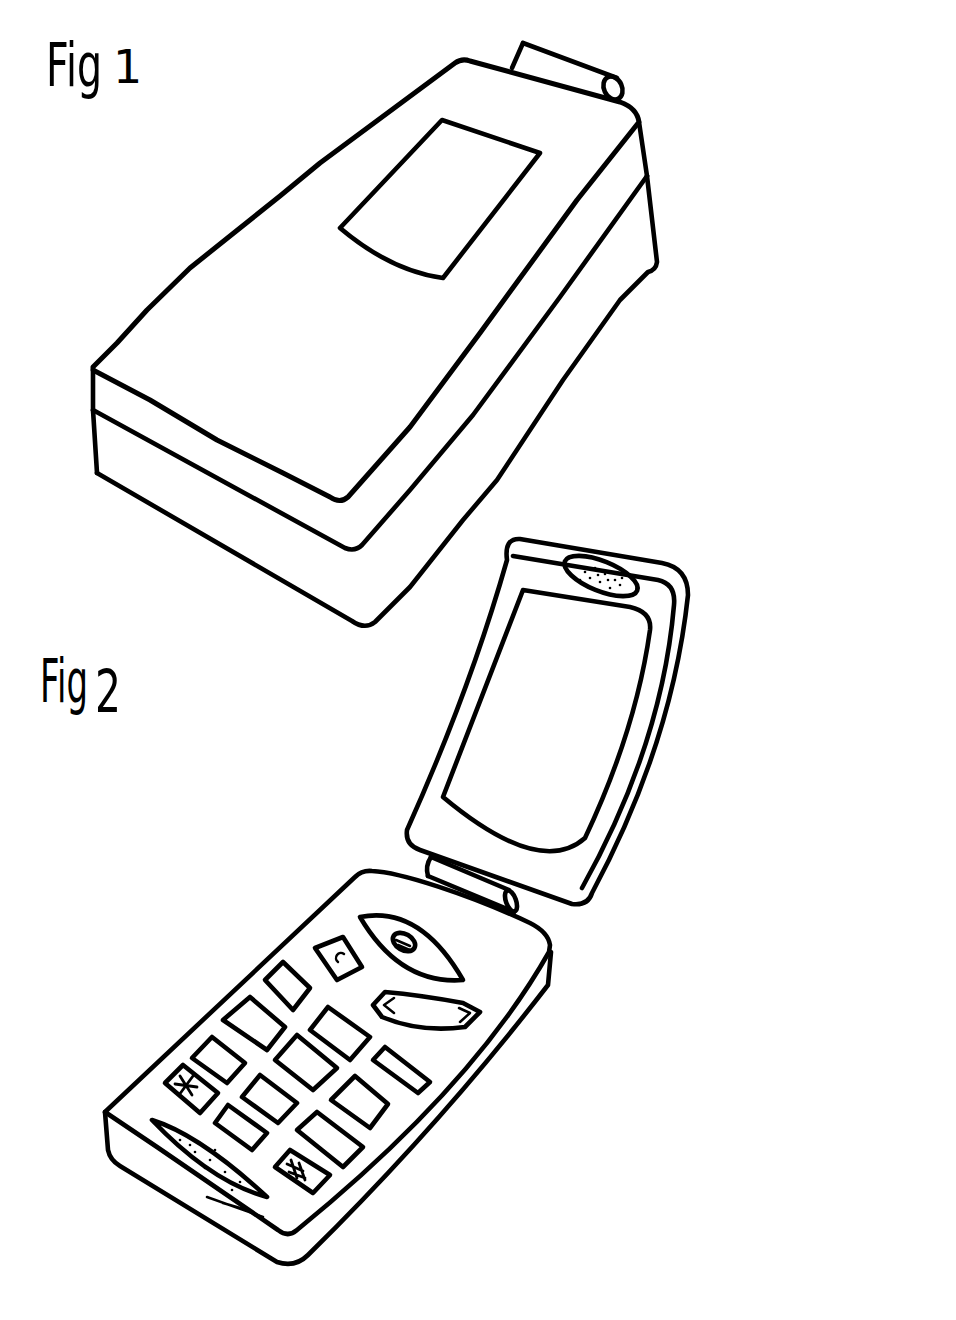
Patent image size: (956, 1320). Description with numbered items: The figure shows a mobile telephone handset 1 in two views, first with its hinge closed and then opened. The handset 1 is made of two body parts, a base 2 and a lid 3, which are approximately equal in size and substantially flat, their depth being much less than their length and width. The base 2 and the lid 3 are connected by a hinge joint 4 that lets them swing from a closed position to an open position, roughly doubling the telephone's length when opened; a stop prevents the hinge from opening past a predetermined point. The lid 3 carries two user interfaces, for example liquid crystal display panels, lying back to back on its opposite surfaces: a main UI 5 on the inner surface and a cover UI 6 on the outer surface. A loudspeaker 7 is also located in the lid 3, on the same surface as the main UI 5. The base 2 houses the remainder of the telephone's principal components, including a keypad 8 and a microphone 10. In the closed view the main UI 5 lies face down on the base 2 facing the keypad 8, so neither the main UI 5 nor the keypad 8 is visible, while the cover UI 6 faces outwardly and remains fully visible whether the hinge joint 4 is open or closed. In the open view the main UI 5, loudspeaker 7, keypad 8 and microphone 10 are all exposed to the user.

In FIG. 1, the mobile telephone handset 1 is at (660, 100).
In FIG. 2, the mobile telephone handset 1 is at (377, 767).
In FIG. 1, the base 2 is at (613, 280).
In FIG. 2, the base 2 is at (545, 992).
In FIG. 1, the lid 3 is at (583, 152).
In FIG. 2, the lid 3 is at (663, 720).
In FIG. 1, the hinge joint 4 is at (582, 72).
In FIG. 2, the hinge joint 4 is at (533, 907).
In FIG. 2, the main UI 5 is at (615, 667).
In FIG. 1, the cover UI 6 is at (423, 177).
In FIG. 2, the loudspeaker 7 is at (635, 560).
In FIG. 2, the keypad 8 is at (403, 1063).
In FIG. 2, the microphone 10 is at (267, 1200).